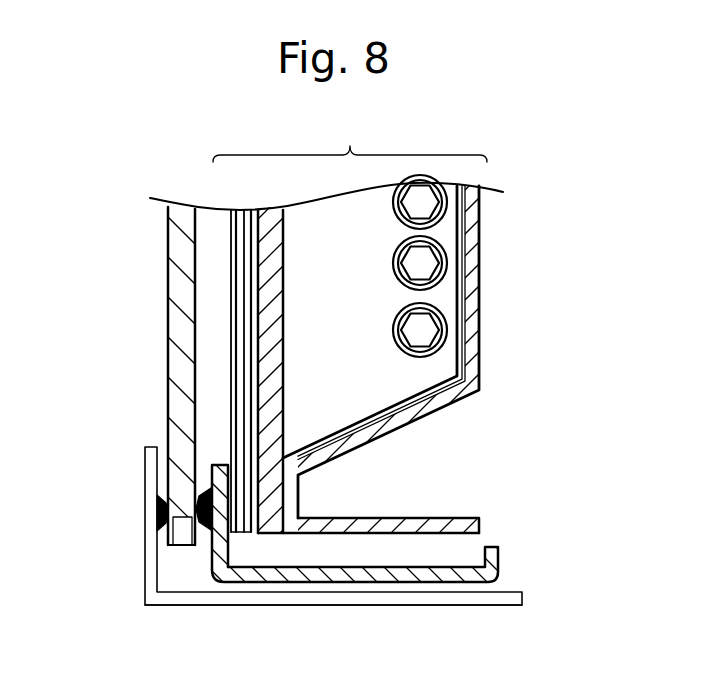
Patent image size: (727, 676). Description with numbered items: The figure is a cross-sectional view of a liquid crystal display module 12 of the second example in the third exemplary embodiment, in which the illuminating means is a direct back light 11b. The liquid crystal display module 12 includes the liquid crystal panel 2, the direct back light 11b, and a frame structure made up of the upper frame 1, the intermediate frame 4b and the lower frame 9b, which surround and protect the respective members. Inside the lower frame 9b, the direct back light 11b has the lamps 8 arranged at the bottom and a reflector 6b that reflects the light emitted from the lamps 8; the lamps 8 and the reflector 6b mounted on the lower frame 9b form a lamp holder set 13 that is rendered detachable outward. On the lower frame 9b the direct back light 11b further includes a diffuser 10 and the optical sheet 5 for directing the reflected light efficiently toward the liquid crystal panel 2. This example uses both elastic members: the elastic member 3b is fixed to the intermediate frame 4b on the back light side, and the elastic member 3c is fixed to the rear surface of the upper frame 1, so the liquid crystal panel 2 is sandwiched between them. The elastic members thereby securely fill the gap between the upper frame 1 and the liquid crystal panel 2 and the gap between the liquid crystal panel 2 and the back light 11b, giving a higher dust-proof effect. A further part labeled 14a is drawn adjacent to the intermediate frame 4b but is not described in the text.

The upper frame 1 is at (148, 578).
The liquid crystal panel 2 is at (168, 345).
The elastic member 3b is at (200, 496).
The elastic member 3c is at (160, 530).
The intermediate frame 4b is at (418, 572).
The optical sheet 5 is at (231, 250).
The reflector 6b is at (441, 376).
The lamps 8 is at (445, 249).
The lower frame 9b is at (400, 521).
The diffuser 10 is at (267, 293).
The direct back light 11b is at (350, 134).
The liquid crystal display module 12 is at (160, 612).
The lamp holder set 13 is at (470, 283).
The holding plate 14a is at (212, 500).